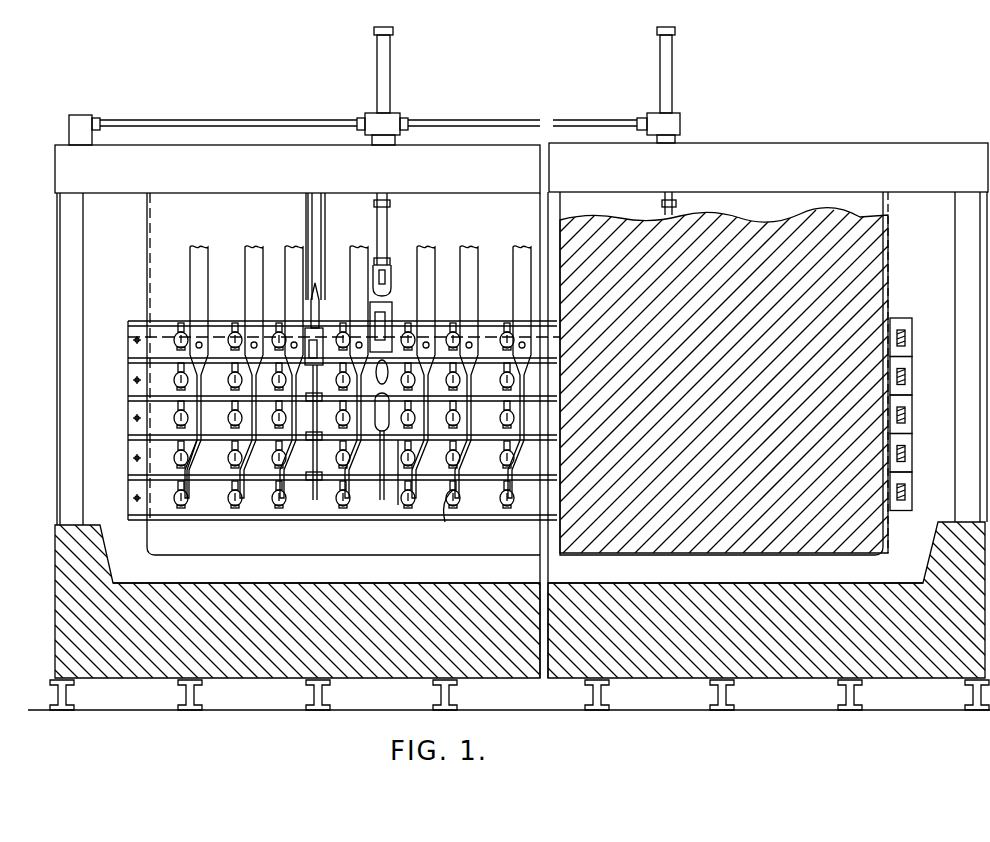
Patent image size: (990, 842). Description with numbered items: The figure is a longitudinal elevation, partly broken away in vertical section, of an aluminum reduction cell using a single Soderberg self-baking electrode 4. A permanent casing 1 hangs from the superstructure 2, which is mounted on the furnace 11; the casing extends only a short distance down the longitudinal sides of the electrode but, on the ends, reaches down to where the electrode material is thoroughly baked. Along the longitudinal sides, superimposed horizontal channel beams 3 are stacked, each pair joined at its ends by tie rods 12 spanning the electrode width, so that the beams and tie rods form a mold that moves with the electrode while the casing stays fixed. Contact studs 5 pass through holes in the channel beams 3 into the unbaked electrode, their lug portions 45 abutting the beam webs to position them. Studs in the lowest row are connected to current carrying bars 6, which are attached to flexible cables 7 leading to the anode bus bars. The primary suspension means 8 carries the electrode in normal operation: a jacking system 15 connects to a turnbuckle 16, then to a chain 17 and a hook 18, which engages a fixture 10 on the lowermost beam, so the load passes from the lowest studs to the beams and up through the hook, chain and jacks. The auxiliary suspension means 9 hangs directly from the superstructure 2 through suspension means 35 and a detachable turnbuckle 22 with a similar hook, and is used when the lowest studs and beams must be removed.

The permanent casing 1 is at (145, 282).
The superstructure 2 is at (53, 170).
The channel beams 3 is at (127, 325).
The electrode 4 is at (357, 553).
The contact studs 5 is at (178, 410).
The current carrying bars 6 is at (197, 450).
The flexible cables 7 is at (203, 253).
The primary suspension means 8 is at (390, 229).
The auxiliary suspension means 9 is at (326, 224).
The fixture 10 is at (305, 506).
The furnace 11 is at (68, 592).
The tie rods 12 is at (901, 328).
The jacking system 15 is at (376, 62).
The turnbuckle 16 is at (387, 306).
The chain 17 is at (386, 372).
The hook 18 is at (398, 505).
The turnbuckle 22 is at (318, 338).
The suspension means 35 is at (305, 210).
The lug portions 45 is at (457, 495).